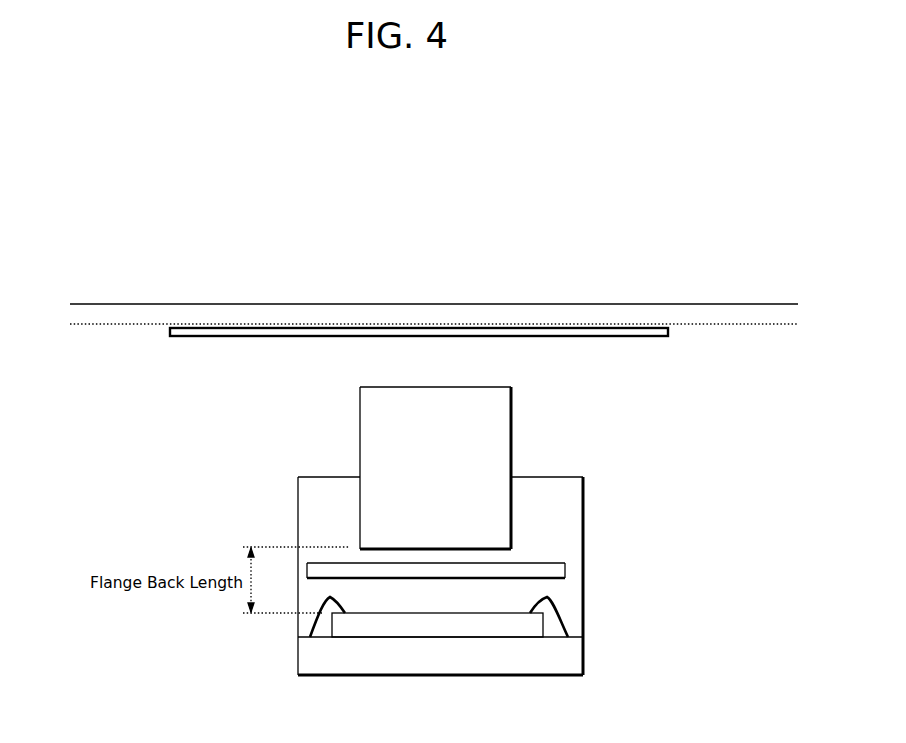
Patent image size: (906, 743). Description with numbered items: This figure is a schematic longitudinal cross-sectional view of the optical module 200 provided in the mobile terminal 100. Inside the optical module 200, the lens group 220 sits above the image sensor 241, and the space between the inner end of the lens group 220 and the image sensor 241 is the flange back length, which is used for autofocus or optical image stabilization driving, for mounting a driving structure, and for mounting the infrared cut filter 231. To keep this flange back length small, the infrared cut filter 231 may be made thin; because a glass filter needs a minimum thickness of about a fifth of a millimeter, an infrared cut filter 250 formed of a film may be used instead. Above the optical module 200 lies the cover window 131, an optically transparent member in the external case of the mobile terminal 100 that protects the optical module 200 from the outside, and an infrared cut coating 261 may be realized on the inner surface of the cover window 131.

The mobile terminal 100 is at (52, 196).
The cover window 131 is at (190, 304).
The infrared cut coating 261 is at (210, 338).
The lens group 220 is at (366, 431).
The optical module 200 is at (603, 532).
The infrared cut filter 231 is at (565, 569).
The infrared cut filter formed of a film 250 is at (436, 570).
The image sensor 241 is at (545, 623).